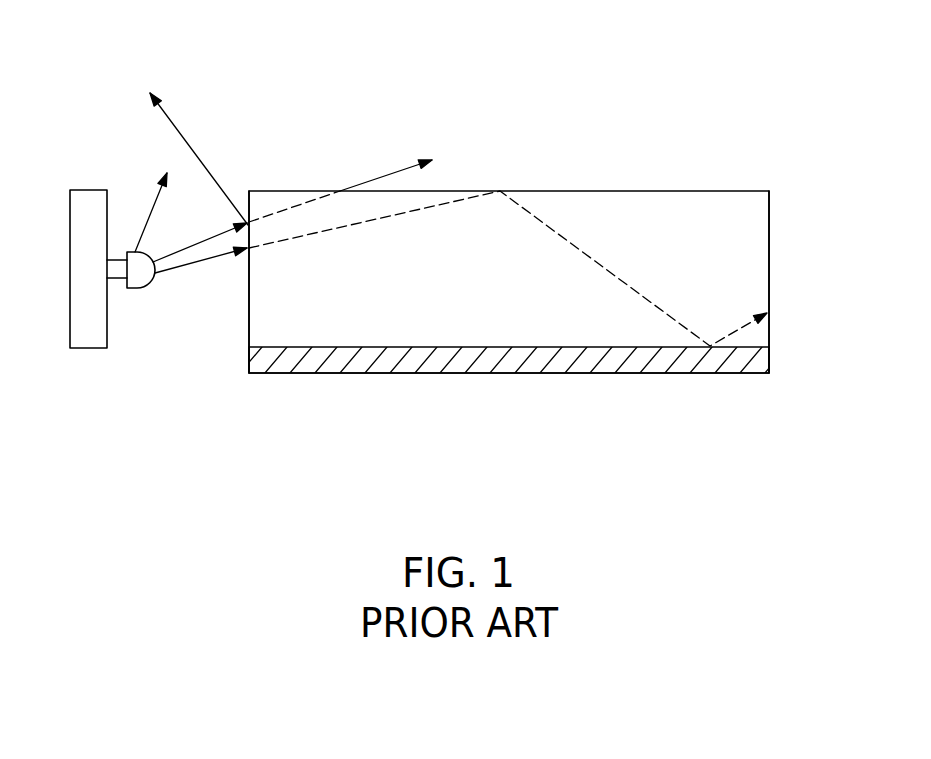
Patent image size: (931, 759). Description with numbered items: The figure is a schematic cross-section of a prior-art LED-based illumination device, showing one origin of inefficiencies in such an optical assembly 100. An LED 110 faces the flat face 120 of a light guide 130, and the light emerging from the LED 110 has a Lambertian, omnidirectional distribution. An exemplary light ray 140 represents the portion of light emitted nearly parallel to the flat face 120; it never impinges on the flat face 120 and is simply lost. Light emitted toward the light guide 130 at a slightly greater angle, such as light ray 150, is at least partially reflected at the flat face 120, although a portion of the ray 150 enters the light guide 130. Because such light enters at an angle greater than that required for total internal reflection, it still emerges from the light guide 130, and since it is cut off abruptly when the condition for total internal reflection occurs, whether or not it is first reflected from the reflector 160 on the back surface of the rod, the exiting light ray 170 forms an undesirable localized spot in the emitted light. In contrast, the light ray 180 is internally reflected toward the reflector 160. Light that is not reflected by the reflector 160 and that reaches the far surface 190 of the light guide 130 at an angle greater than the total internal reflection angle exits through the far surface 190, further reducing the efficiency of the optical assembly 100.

The optical assembly 100 is at (605, 95).
The LED 110 is at (133, 290).
The flat face 120 is at (249, 212).
The light guide 130 is at (690, 196).
The light ray 140 is at (155, 201).
The light ray 150 is at (197, 243).
The reflector 160 is at (442, 365).
The exiting light ray 170 is at (395, 172).
The light ray 180 is at (195, 263).
The far surface 190 is at (770, 235).